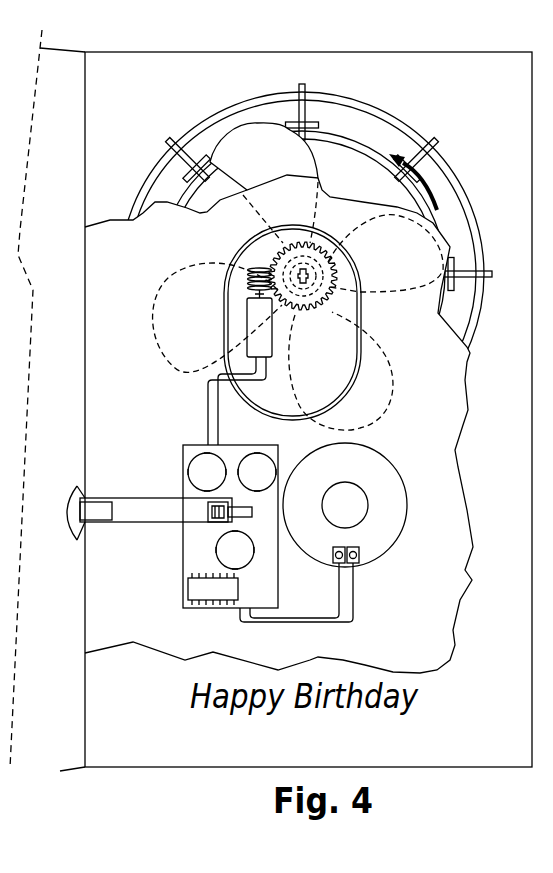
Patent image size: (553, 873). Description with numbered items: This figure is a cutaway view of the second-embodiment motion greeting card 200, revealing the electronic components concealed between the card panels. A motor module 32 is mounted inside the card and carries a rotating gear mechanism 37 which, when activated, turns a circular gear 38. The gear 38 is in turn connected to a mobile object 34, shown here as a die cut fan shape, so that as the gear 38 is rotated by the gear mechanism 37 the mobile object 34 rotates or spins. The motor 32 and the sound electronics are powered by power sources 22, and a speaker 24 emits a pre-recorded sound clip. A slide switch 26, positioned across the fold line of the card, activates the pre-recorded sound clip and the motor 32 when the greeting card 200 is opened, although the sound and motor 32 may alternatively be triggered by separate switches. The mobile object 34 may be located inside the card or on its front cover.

The greeting card 200 is at (268, 29).
The power source 22 is at (254, 467).
The speaker 24 is at (382, 515).
The slide switch 26 is at (215, 508).
The motor module 32 is at (337, 373).
The mobile object 34 is at (252, 152).
The rotating gear mechanism 37 is at (245, 281).
The circular gear 38 is at (330, 272).